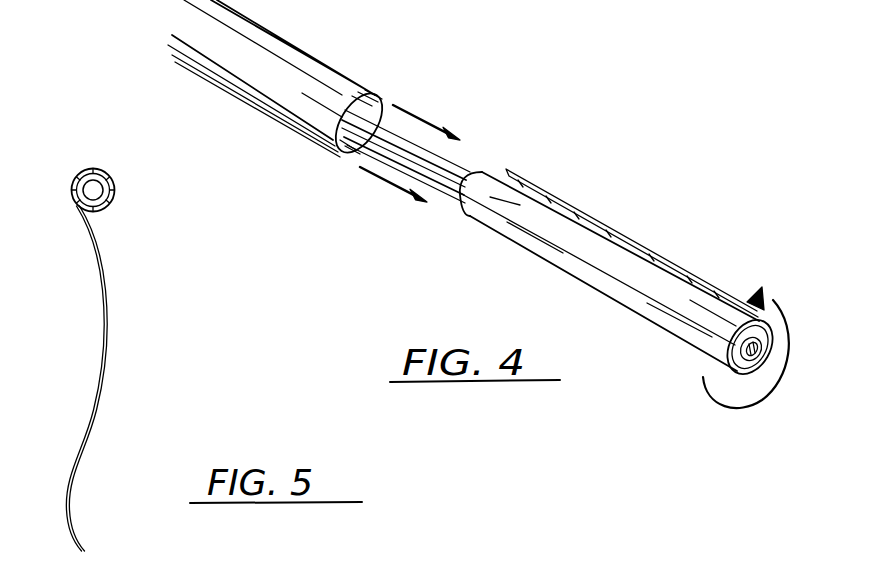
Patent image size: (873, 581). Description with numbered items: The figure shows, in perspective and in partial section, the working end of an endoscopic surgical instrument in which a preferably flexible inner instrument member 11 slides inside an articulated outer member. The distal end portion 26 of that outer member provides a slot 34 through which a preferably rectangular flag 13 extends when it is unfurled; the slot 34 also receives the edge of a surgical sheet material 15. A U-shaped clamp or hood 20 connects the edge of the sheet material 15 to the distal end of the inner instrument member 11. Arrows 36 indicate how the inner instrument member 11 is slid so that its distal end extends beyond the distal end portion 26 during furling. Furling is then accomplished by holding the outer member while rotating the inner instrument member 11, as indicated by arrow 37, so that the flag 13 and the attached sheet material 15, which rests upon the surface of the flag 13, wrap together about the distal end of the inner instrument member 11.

In FIG. 4, the inner instrument member 11 is at (467, 168).
In FIG. 5, the inner instrument member 11 is at (102, 208).
In FIG. 4, the flag 13 is at (589, 216).
In FIG. 5, the flag 13 is at (109, 373).
In FIG. 4, the surgical sheet material 15 is at (704, 281).
In FIG. 5, the surgical sheet material 15 is at (106, 320).
In FIG. 5, the U-shaped hood 20 is at (96, 170).
In FIG. 4, the distal end portion of outer instrument member 26 is at (310, 56).
In FIG. 4, the slot 34 is at (280, 104).
In FIG. 4, the arrows 36 is at (420, 114).
In FIG. 4, the arrow 37 is at (738, 408).